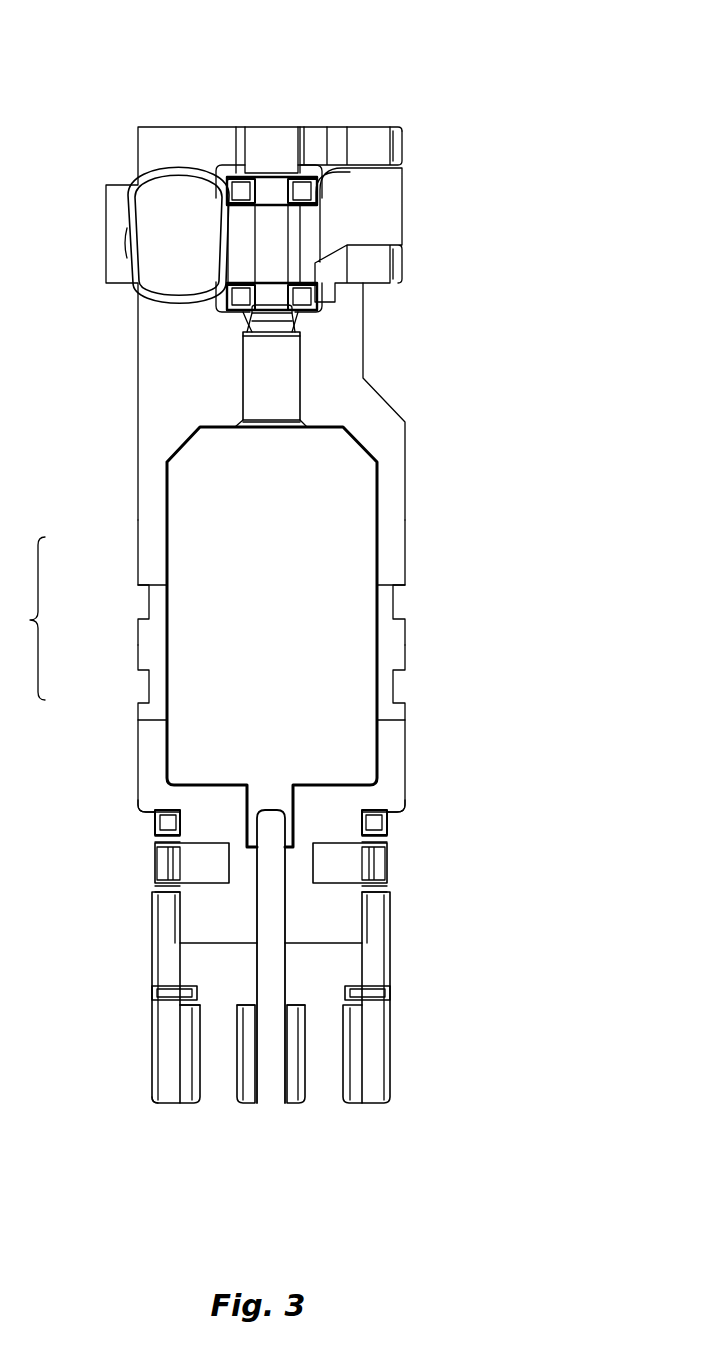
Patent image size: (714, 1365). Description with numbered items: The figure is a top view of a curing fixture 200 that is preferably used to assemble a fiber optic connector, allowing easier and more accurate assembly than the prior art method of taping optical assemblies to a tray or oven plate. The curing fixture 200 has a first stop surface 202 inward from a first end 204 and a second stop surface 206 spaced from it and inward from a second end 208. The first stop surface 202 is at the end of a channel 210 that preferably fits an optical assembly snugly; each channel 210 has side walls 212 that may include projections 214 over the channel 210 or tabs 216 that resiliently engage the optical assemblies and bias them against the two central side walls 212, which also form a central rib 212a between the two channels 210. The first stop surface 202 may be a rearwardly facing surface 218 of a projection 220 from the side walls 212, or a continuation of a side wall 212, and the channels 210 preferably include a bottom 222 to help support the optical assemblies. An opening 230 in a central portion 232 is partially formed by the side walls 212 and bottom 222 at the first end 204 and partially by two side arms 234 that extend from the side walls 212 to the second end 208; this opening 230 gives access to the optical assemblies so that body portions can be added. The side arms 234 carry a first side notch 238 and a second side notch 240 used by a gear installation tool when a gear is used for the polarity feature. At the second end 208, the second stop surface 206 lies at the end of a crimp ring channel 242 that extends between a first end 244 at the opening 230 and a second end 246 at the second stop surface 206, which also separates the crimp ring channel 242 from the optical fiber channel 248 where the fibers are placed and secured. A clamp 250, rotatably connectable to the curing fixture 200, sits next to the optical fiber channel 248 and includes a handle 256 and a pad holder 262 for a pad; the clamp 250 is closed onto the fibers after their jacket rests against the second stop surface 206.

The curing fixture 200 is at (522, 652).
The first stop surface 202 is at (250, 1000).
The first end 204 is at (135, 1093).
The second stop surface 206 is at (245, 320).
The second end 208 is at (153, 101).
The channel 210 is at (215, 1092).
The side walls 212 is at (375, 945).
The central rib 212a is at (270, 810).
The projections 214 is at (160, 995).
The tabs 216 is at (160, 862).
The surface 218 is at (250, 1003).
The projection 220 is at (187, 1094).
The bottom 222 is at (200, 800).
The opening 230 is at (360, 515).
The central portion 232 is at (22, 618).
The side arms 234 is at (137, 560).
The first side notch 238 is at (149, 607).
The second side notch 240 is at (149, 693).
The crimp ring channel 242 is at (288, 365).
The first end 244 is at (270, 430).
The second end 246 is at (300, 325).
The optical fiber channel 248 is at (265, 150).
The clamp 250 is at (385, 203).
The handle 256 is at (177, 235).
The pad holder 262 is at (237, 186).